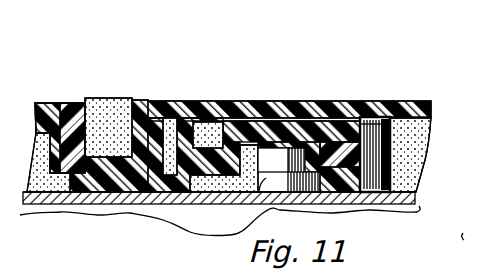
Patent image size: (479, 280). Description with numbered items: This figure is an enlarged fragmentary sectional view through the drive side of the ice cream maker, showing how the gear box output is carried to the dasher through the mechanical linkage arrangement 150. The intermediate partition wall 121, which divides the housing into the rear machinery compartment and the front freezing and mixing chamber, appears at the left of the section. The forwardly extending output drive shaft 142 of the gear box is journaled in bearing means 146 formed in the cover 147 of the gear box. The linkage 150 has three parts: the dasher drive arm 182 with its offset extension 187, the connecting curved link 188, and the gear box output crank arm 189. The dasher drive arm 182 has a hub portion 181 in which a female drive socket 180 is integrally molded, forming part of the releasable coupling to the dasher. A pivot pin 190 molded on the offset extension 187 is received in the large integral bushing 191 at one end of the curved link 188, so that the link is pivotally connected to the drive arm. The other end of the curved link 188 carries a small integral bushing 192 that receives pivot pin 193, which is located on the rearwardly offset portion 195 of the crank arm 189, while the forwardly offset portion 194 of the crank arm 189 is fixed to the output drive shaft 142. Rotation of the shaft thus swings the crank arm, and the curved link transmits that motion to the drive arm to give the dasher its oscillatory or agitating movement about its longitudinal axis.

The intermediate partition wall 121 is at (58, 110).
The female drive socket 180 is at (99, 99).
The hub portion 181 is at (60, 187).
The output drive shaft 142 is at (260, 136).
The small integral bushing 192 is at (400, 133).
The offset extension 187 is at (207, 153).
The large integral bushing 191 is at (168, 124).
The pivot pin 190 is at (213, 126).
The bearing means 146 is at (267, 183).
The forwardly offset portion 194 is at (308, 147).
The gear box output crank arm 189 is at (352, 188).
The connecting curved link 188 is at (340, 127).
The pivot pin 193 is at (367, 123).
The rearwardly offset portion 195 is at (432, 118).
The cover 147 is at (92, 198).
The dasher drive arm 182 is at (190, 191).
The mechanical linkage arrangement 150 is at (407, 185).